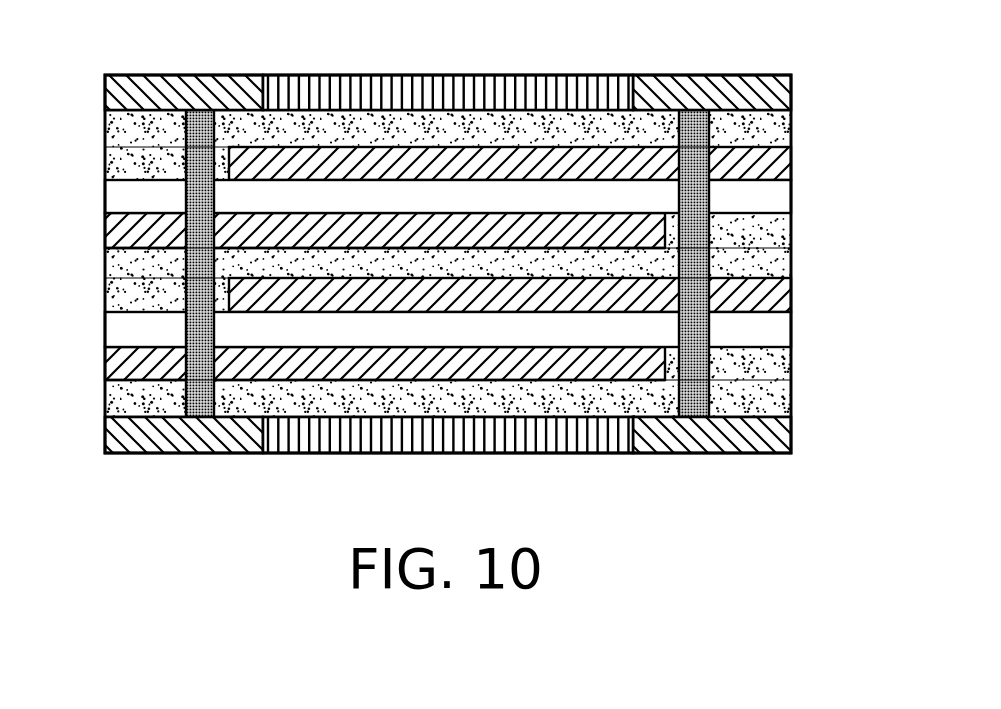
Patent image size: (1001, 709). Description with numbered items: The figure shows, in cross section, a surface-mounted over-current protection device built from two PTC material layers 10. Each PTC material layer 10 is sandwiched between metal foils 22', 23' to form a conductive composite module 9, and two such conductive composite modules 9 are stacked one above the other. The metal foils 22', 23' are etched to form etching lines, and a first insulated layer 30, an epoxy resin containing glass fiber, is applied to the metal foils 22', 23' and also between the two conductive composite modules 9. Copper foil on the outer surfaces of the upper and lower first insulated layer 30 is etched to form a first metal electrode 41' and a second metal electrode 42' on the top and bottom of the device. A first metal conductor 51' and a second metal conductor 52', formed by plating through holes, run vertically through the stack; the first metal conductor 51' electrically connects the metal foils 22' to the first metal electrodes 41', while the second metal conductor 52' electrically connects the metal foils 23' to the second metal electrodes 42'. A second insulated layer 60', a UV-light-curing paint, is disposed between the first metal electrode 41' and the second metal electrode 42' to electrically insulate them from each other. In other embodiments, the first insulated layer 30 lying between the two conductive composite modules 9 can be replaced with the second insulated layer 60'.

The conductive composite module 9 is at (93, 148).
The PTC material layer 10 is at (780, 197).
The metal foil 22' is at (552, 230).
The metal foil 23' is at (490, 299).
The first insulated layer 30 is at (788, 127).
The first metal electrode 41' is at (754, 265).
The second metal electrode 42' is at (145, 262).
The first metal conductor 51' is at (490, 262).
The second metal conductor 52' is at (118, 263).
The second insulated layer 60' is at (448, 264).